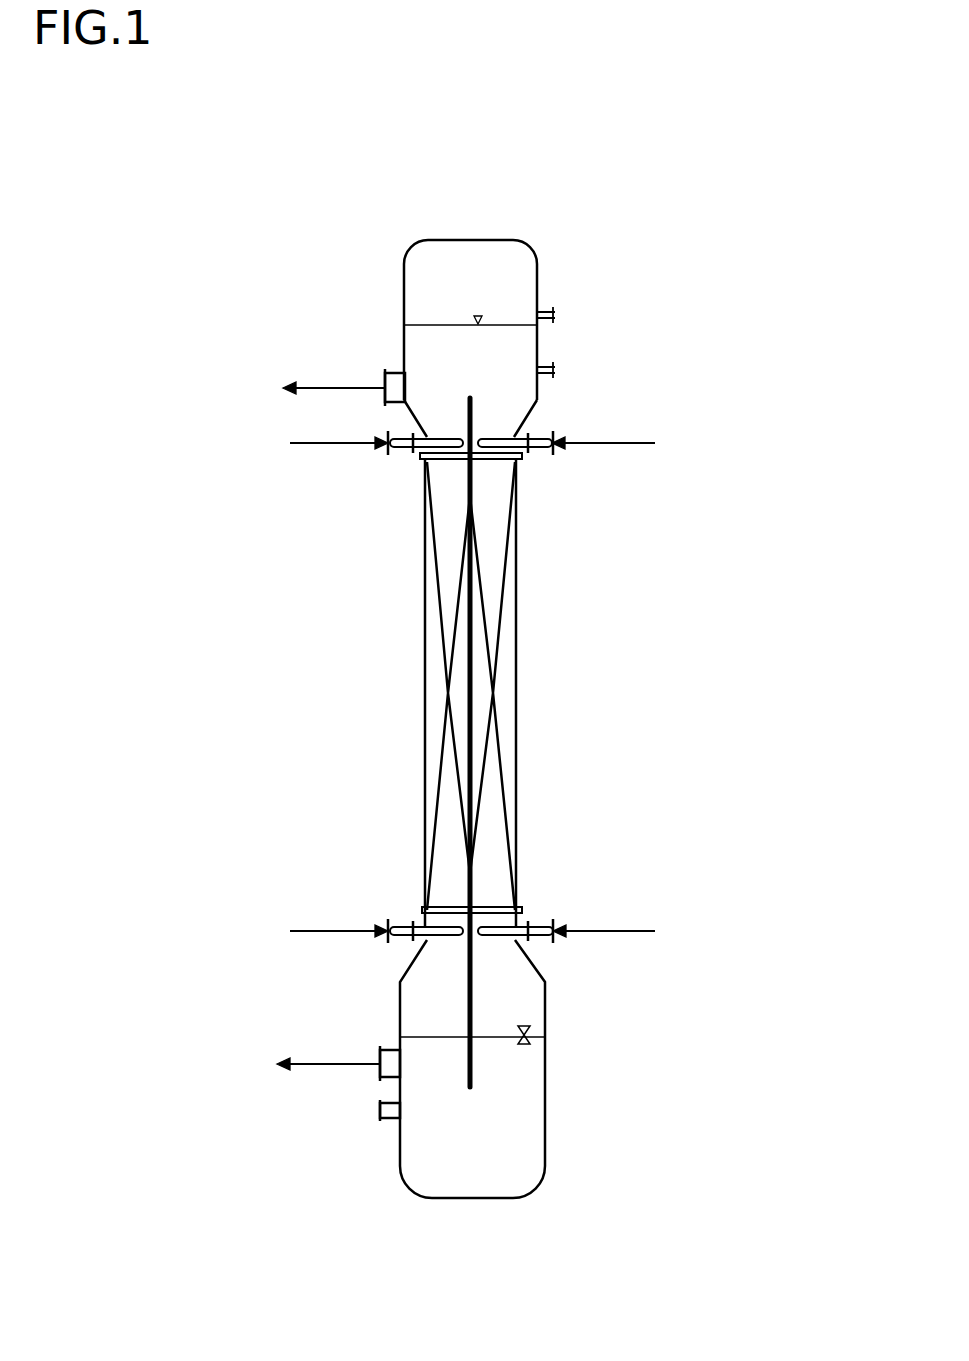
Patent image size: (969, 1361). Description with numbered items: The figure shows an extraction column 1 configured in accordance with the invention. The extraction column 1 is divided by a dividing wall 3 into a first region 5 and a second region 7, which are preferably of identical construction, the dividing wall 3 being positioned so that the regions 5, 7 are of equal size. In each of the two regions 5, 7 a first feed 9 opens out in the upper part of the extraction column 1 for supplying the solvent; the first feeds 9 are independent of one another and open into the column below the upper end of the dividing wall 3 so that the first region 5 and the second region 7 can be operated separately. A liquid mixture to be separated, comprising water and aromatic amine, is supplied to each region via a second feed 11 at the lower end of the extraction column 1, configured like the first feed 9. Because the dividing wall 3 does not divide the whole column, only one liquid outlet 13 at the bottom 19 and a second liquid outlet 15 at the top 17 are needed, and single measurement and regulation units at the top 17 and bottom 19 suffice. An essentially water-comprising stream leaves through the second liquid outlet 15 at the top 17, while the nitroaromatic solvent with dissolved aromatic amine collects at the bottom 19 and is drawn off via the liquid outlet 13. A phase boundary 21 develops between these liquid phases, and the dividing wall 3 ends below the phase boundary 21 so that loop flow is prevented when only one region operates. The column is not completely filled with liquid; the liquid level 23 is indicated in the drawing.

The extraction column 1 is at (410, 608).
The dividing wall 3 is at (477, 693).
The first region 5 is at (435, 700).
The second region 7 is at (503, 608).
The first feed 9 is at (398, 440).
The second feed 11 is at (400, 925).
The liquid outlet 13 is at (332, 1060).
The second liquid outlet 15 is at (397, 382).
The top of the extraction column 17 is at (515, 242).
The bottom of the extraction column 19 is at (535, 1190).
The phase boundary 21 is at (500, 1037).
The liquid level 23 is at (423, 325).